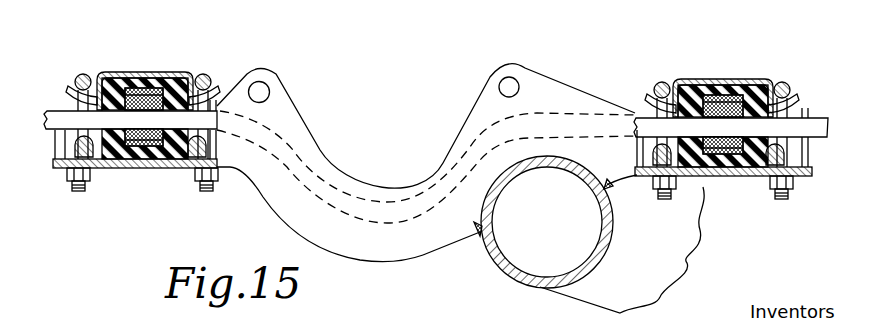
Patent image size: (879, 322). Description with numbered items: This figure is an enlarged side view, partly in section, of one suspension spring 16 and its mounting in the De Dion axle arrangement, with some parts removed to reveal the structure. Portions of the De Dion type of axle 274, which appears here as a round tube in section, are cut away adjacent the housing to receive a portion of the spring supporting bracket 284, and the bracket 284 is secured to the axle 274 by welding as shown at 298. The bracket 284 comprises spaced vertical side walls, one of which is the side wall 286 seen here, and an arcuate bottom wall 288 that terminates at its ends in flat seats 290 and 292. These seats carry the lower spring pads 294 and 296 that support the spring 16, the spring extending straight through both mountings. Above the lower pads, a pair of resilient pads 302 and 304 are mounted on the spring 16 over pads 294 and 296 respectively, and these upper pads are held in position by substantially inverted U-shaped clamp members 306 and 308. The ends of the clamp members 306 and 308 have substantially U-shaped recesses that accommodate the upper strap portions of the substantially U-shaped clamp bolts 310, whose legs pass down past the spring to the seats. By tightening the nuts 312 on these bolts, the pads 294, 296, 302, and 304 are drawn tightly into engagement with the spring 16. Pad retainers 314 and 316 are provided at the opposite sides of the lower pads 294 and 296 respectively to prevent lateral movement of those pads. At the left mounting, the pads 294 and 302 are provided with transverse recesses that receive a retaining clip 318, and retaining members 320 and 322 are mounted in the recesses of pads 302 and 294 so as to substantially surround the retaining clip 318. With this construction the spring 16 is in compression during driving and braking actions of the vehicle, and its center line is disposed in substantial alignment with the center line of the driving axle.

The suspension spring 16 is at (805, 128).
The De Dion type of axle 274 is at (540, 290).
The spring supporting bracket 284 is at (572, 85).
The side wall 286 is at (540, 95).
The arcuate bottom wall 288 is at (421, 257).
The flat seat 290 is at (143, 160).
The flat seat 292 is at (745, 176).
The lower spring pad 294 is at (165, 167).
The lower spring pad 296 is at (717, 176).
The welding 298 is at (478, 233).
The resilient pad 302 is at (107, 72).
The resilient pad 304 is at (720, 96).
The clamp member 306 is at (178, 72).
The clamp member 308 is at (696, 78).
The clamp bolt 310 is at (83, 74).
The nut 312 is at (82, 172).
The pad retainer 314 is at (89, 141).
The pad retainer 316 is at (650, 156).
The retaining clip 318 is at (167, 72).
The retaining member 320 is at (143, 87).
The retaining member 322 is at (120, 163).